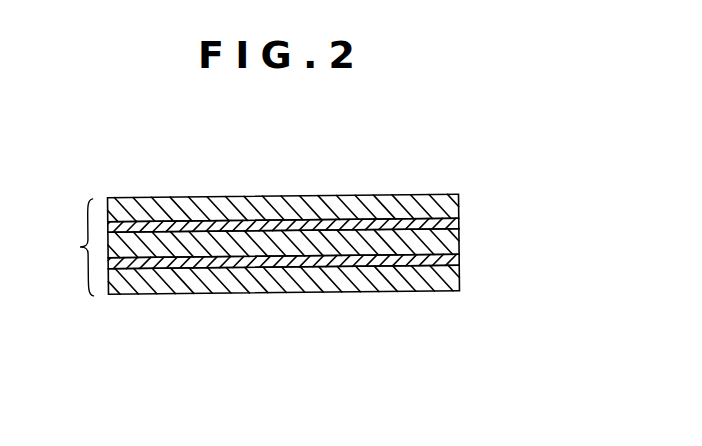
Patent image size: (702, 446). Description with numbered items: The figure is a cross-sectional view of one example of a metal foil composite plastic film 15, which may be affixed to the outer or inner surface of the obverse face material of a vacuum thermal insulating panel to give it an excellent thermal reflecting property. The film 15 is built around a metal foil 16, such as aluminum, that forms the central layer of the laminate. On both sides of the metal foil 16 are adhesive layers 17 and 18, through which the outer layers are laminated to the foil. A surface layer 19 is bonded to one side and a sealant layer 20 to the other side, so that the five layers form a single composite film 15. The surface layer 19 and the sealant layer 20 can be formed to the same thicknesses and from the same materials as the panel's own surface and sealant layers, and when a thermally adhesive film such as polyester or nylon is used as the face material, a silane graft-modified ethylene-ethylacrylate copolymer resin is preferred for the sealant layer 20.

The metal foil composite plastic film 15 is at (70, 247).
The metal foil 16 is at (450, 243).
The adhesive layer 17 is at (453, 260).
The adhesive layer 18 is at (448, 226).
The surface layer 19 is at (437, 282).
The sealant layer 20 is at (448, 207).